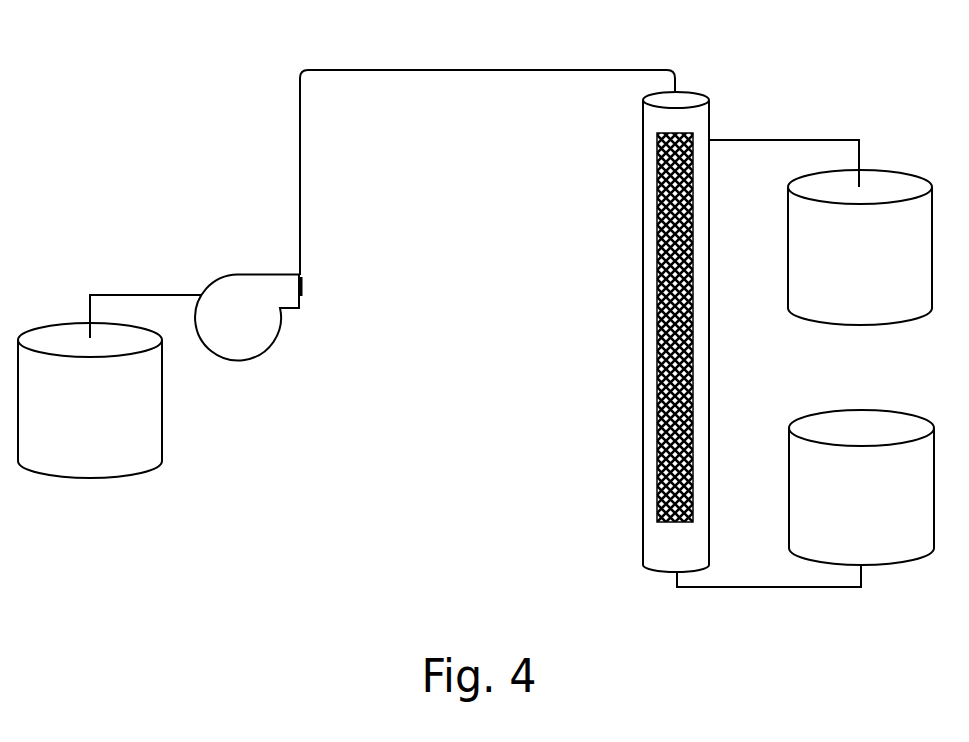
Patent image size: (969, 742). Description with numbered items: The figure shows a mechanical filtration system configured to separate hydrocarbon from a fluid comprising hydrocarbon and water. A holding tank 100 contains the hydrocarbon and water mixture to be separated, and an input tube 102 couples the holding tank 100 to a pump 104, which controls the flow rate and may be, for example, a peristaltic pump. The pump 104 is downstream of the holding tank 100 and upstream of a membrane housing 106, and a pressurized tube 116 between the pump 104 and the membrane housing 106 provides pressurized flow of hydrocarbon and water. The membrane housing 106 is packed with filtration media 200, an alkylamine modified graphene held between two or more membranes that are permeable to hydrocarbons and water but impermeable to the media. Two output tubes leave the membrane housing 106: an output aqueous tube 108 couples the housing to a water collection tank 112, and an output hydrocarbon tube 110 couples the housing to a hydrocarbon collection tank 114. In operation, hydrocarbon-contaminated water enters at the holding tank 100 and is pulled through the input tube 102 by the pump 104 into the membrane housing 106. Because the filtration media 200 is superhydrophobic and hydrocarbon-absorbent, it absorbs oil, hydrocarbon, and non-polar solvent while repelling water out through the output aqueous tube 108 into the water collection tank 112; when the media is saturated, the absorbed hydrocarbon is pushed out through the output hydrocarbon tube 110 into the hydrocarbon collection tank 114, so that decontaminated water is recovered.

The holding tank 100 is at (90, 423).
The input tube 102 is at (145, 303).
The pump 104 is at (248, 337).
The membrane housing 106 is at (643, 332).
The output aqueous tube 108 is at (784, 147).
The output hydrocarbon tube 110 is at (769, 597).
The water collection tank 112 is at (860, 247).
The hydrocarbon collection tank 114 is at (861, 487).
The pressurized tube 116 is at (487, 155).
The filtration media 200 is at (668, 358).